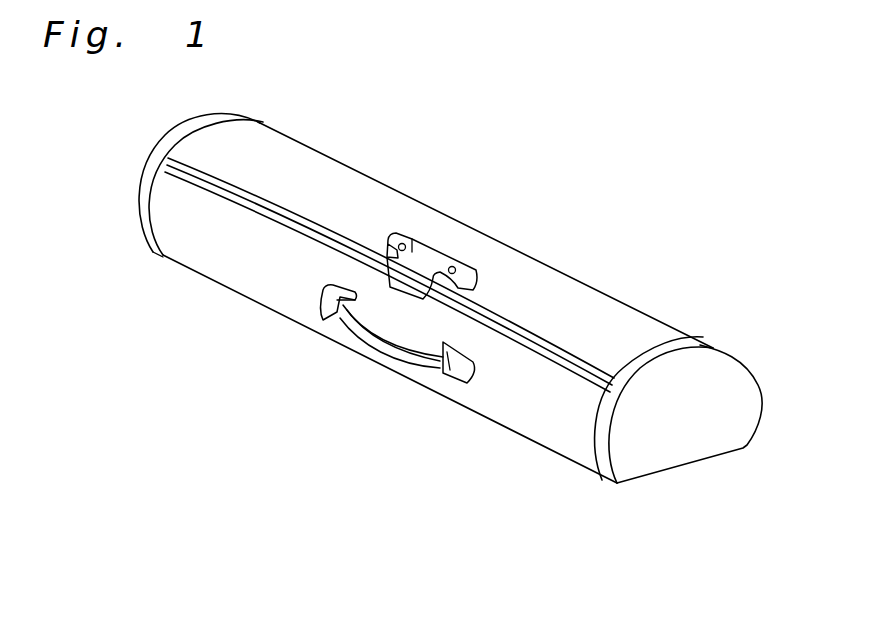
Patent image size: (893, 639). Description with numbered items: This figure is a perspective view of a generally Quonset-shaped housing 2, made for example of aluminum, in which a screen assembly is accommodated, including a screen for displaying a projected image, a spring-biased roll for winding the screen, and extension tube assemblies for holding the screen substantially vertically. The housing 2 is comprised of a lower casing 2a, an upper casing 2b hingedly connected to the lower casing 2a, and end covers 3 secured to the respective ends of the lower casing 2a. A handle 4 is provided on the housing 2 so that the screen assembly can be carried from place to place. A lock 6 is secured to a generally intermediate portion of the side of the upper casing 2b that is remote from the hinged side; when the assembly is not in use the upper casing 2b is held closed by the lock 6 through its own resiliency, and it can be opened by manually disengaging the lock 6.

The housing 2 is at (620, 281).
The lower casing 2a is at (550, 425).
The upper casing 2b is at (637, 323).
The end covers 3 is at (157, 160).
The handle 4 is at (388, 352).
The lock 6 is at (413, 277).